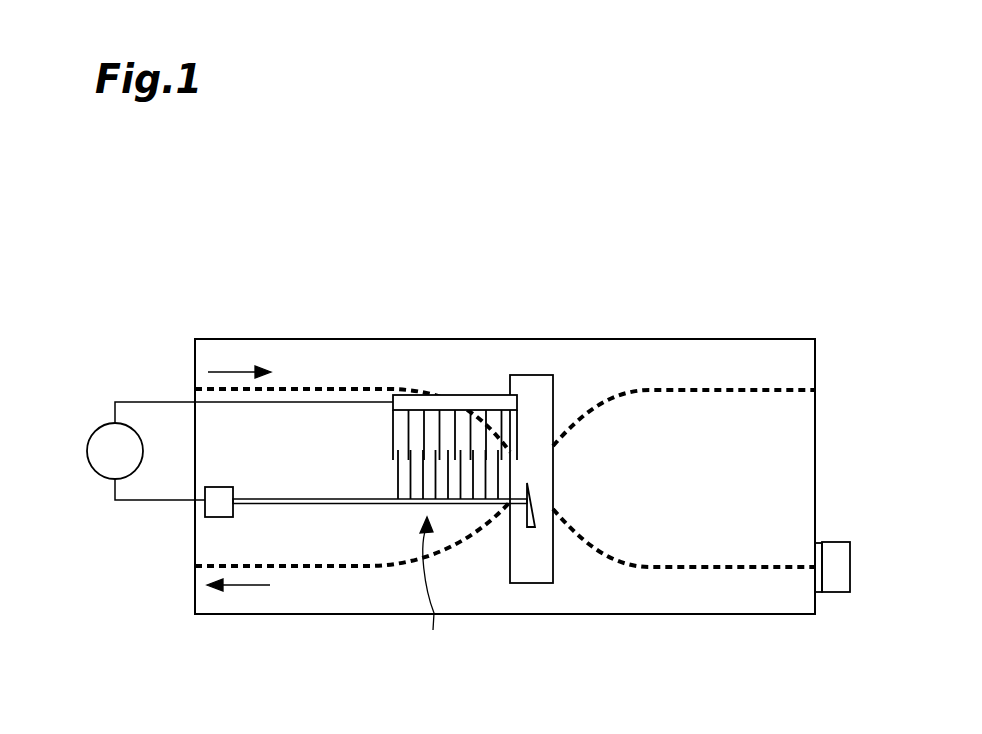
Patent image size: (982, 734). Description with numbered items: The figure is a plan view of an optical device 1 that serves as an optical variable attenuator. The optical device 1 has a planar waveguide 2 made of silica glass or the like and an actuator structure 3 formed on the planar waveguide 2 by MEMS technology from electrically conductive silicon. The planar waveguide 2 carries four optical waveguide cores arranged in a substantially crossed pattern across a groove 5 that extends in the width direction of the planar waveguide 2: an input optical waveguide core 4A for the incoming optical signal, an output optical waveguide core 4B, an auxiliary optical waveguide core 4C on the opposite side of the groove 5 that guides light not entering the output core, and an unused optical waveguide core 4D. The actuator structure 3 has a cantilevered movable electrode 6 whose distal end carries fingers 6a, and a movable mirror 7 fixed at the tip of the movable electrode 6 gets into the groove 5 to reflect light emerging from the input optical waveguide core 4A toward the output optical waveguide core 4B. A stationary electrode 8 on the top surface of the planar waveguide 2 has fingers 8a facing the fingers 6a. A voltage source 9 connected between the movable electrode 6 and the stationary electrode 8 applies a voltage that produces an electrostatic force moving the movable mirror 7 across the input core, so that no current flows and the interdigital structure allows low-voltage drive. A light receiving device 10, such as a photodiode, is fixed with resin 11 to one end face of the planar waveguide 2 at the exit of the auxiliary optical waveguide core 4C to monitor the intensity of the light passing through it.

The optical device 1 is at (662, 292).
The planar waveguide 2 is at (623, 602).
The actuator structure 3 is at (430, 590).
The input optical waveguide core 4A is at (332, 388).
The output optical waveguide core 4B is at (366, 567).
The auxiliary optical waveguide core 4C is at (697, 570).
The unused optical waveguide core 4D is at (738, 390).
The groove 5 is at (525, 573).
The movable electrode 6 is at (330, 505).
The fingers 6a is at (398, 478).
The movable mirror 7 is at (533, 503).
The stationary electrode 8 is at (482, 402).
The fingers 8a is at (392, 438).
The voltage source 9 is at (87, 451).
The light receiving device 10 is at (843, 565).
The resin 11 is at (818, 543).